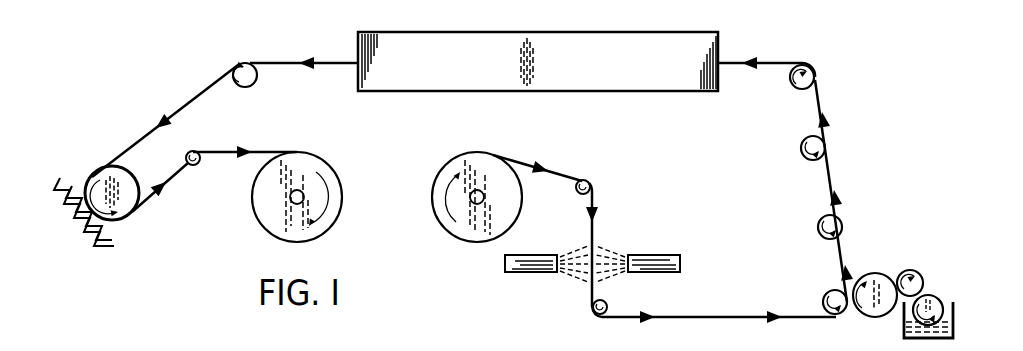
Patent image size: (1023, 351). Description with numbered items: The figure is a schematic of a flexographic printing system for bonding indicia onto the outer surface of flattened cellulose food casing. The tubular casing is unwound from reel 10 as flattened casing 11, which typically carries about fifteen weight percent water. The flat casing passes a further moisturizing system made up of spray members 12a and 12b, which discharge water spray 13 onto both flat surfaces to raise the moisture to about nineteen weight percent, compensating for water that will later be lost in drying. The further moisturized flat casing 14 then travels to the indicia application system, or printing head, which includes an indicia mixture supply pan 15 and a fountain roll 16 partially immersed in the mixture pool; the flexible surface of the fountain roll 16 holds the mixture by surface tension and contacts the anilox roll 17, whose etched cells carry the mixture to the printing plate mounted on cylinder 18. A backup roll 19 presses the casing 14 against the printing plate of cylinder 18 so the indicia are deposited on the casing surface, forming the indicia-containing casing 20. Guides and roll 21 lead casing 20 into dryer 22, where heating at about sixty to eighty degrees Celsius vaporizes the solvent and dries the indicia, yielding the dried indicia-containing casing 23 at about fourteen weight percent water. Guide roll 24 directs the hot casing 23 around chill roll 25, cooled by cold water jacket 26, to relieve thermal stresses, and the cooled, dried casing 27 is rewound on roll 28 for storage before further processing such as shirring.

The reel 10 is at (432, 186).
The flattened casing 11 is at (517, 163).
The spray member 12a is at (520, 273).
The spray member 12b is at (660, 254).
The water spray 13 is at (573, 283).
The further moisturized flat casing 14 is at (722, 317).
The indicia mixture supply pan 15 is at (954, 316).
The fountain roll 16 is at (936, 297).
The anilox roll 17 is at (912, 270).
The cylinder 18 is at (866, 316).
The backup roll 19 is at (826, 294).
The indicia-containing further moisturized flat cellulose casing 20 is at (847, 236).
The roll 21 is at (797, 89).
The dryer 22 is at (517, 92).
The dried indicia-containing flat cellulose casing 23 is at (272, 62).
The guide roll 24 is at (250, 88).
The chill roll 25 is at (126, 170).
The cold water jacket 26 is at (52, 215).
The cooled dried indicia-containing flat casing 27 is at (222, 152).
The roll 28 is at (320, 162).